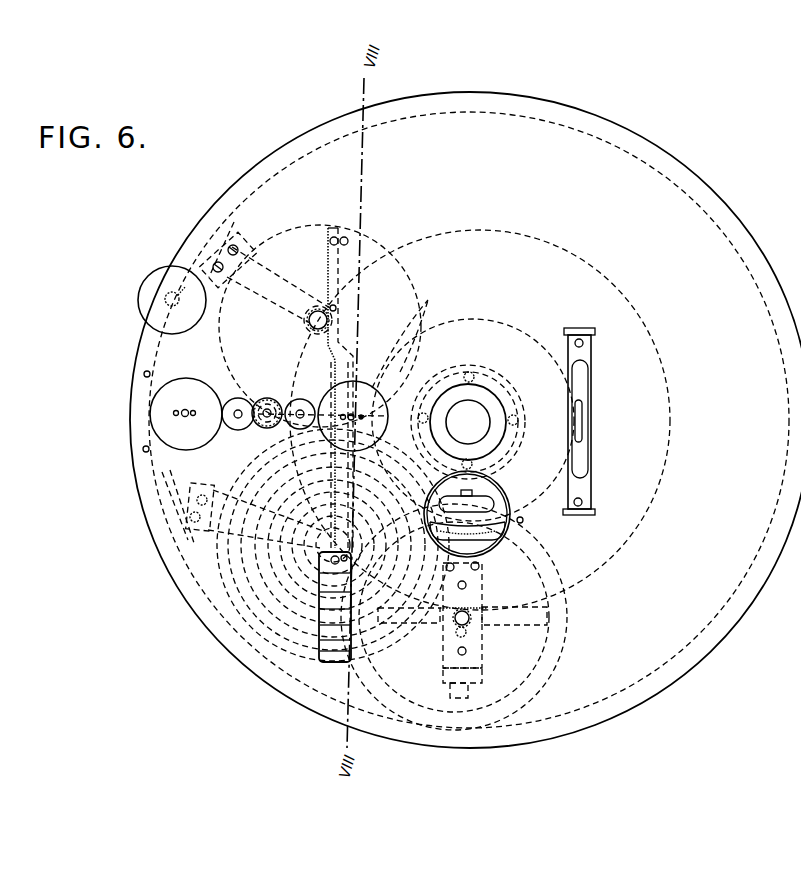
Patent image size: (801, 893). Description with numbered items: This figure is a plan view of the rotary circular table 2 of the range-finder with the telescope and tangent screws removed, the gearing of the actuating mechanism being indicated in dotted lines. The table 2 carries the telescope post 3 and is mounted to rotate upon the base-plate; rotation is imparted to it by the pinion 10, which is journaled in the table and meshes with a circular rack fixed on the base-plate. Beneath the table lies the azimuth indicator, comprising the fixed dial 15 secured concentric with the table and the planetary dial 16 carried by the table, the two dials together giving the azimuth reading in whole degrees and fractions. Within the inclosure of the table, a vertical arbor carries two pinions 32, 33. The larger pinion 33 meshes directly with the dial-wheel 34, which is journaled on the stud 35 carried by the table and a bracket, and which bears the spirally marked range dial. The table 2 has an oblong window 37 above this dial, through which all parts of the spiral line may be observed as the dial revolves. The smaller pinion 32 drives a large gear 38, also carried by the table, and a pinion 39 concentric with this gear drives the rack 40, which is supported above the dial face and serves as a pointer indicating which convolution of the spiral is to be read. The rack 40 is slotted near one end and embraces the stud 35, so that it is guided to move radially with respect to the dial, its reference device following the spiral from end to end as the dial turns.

The circular table 2 is at (465, 420).
The telescope post 3 is at (487, 395).
The pinion 10 is at (172, 299).
The dial 15 is at (470, 512).
The planetary dial 16 is at (500, 531).
The smaller pinion 32 is at (262, 408).
The larger pinion 33 is at (284, 394).
The dial-wheel 34 is at (256, 468).
The stud 35 is at (328, 546).
The oblong window 37 is at (336, 657).
The large gear 38 is at (404, 292).
The pinion 39 is at (327, 322).
The rack 40 is at (335, 286).